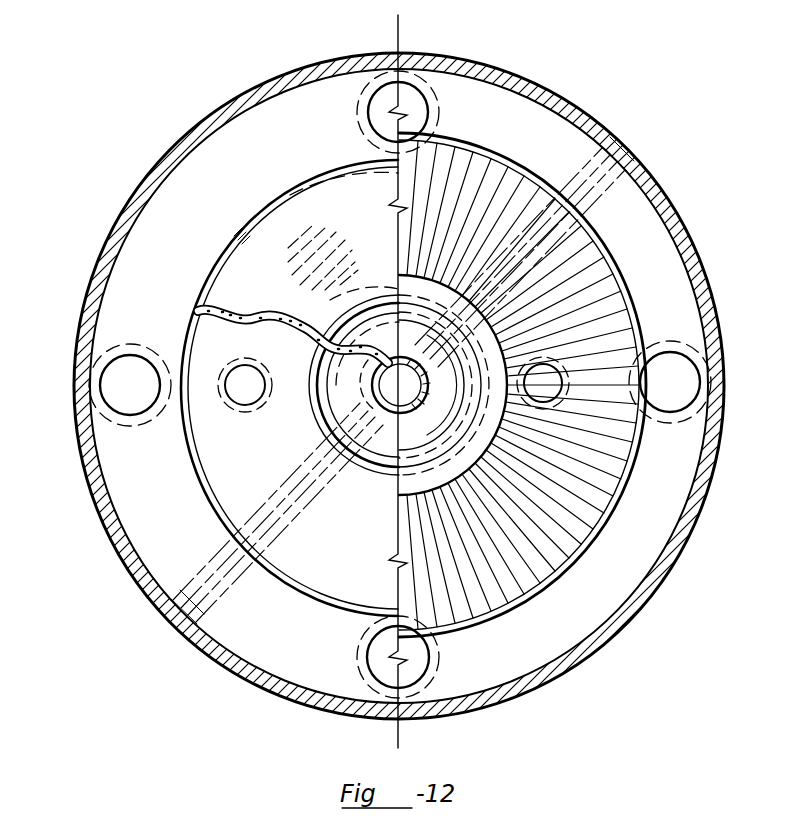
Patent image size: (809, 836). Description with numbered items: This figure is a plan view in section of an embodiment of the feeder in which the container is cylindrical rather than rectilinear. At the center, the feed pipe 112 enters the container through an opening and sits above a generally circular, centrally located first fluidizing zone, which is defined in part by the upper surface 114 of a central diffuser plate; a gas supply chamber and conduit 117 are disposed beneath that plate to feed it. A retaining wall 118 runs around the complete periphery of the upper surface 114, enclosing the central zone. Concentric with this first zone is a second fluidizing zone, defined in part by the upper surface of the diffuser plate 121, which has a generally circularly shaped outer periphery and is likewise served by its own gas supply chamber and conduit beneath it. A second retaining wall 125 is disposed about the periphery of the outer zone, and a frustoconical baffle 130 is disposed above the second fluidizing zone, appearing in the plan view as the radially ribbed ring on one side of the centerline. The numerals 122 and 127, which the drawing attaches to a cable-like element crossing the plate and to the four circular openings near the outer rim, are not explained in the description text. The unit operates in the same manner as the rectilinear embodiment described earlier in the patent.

The feed pipe 112 is at (422, 427).
The upper surface 114 is at (364, 397).
The conduit 117 is at (386, 420).
The retaining wall 118 is at (377, 304).
The diffuser plate 121 is at (384, 240).
The cable 122 is at (248, 312).
The second retaining wall 125 is at (310, 186).
The mounting holes 127 is at (427, 72).
The frustoconical baffle 130 is at (548, 283).